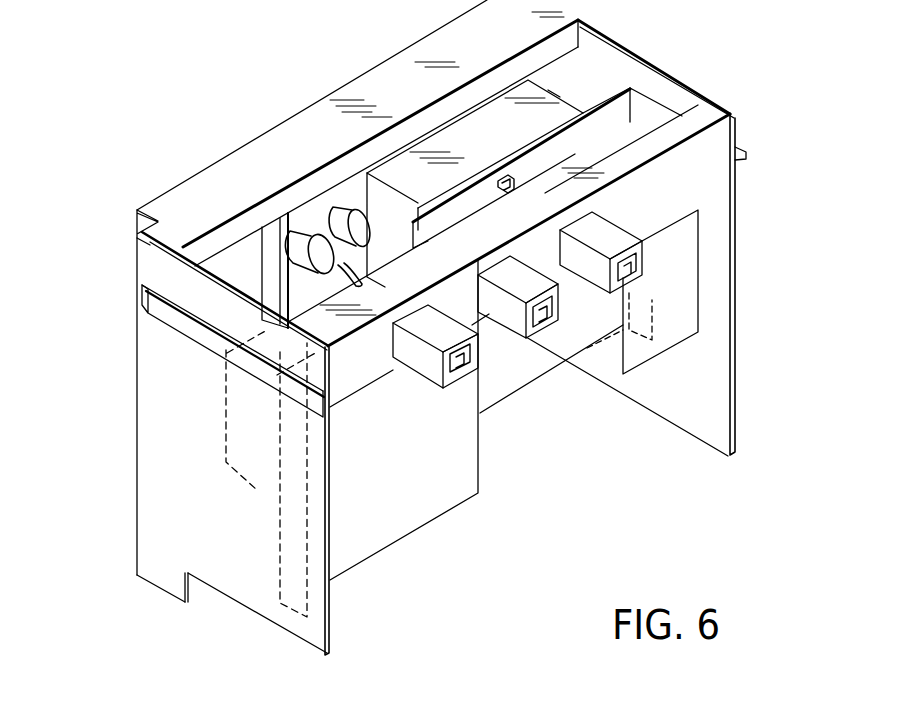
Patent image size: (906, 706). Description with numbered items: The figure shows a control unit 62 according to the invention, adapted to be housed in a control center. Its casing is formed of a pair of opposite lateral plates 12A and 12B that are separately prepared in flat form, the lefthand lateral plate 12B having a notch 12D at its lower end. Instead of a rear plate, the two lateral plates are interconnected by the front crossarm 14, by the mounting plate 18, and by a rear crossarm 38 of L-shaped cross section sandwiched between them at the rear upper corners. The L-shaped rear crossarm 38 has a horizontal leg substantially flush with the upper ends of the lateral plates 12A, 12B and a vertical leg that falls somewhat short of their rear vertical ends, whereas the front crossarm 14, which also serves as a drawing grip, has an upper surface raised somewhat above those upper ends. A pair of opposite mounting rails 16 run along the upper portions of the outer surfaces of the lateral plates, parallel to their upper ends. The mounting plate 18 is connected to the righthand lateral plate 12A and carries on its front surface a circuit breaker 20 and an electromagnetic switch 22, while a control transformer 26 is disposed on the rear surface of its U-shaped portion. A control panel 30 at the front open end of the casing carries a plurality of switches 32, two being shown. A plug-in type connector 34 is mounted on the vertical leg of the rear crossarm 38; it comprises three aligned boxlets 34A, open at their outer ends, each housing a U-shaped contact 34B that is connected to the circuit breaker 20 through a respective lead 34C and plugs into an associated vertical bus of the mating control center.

The righthand lateral plate 12A is at (672, 65).
The lefthand lateral plate 12B is at (162, 527).
The notch 12D is at (237, 0).
The front crossarm 14 is at (183, 182).
The mounting rails 16 is at (140, 300).
The mounting plate 18 is at (608, 98).
The circuit breaker 20 is at (548, 90).
The electromagnetic switch 22 is at (225, 452).
The control transformer 26 is at (677, 345).
The control panel 30 is at (249, 234).
The switches 32 is at (338, 217).
The plug-in type connector 34 is at (530, 338).
The boxlets 34A is at (413, 367).
The U-shaped contacts 34B is at (458, 360).
The leads 34C is at (508, 182).
The rear crossarm 38 is at (697, 107).
The control unit 62 is at (532, 566).